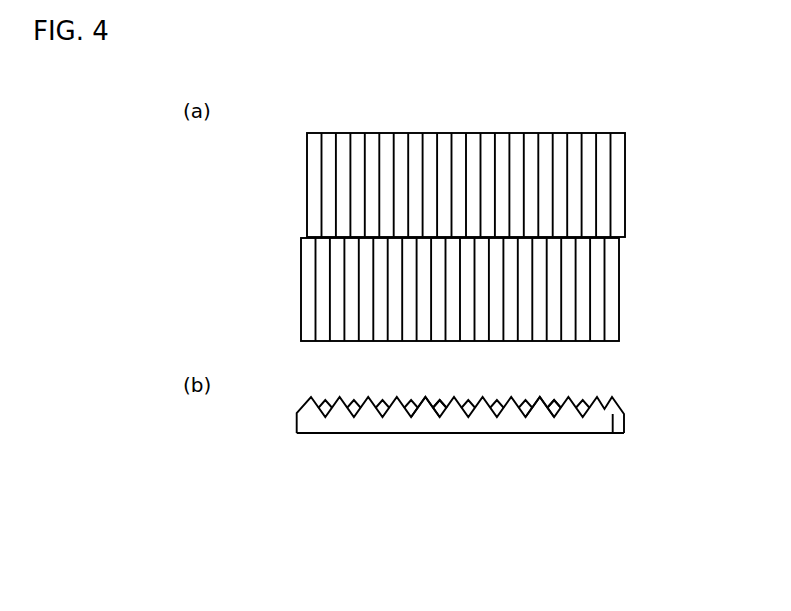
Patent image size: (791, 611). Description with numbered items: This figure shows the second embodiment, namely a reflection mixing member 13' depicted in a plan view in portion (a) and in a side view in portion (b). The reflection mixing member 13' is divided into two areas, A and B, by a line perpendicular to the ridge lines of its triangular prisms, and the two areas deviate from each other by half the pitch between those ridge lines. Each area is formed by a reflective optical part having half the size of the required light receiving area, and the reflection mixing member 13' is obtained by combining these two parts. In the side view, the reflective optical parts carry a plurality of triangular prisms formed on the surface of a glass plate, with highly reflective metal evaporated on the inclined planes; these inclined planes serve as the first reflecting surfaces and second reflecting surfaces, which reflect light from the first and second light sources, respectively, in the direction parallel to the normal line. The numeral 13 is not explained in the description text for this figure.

The reflection mixing member 13' is at (498, 204).
The prism sheet (cross-section) 13 is at (497, 387).